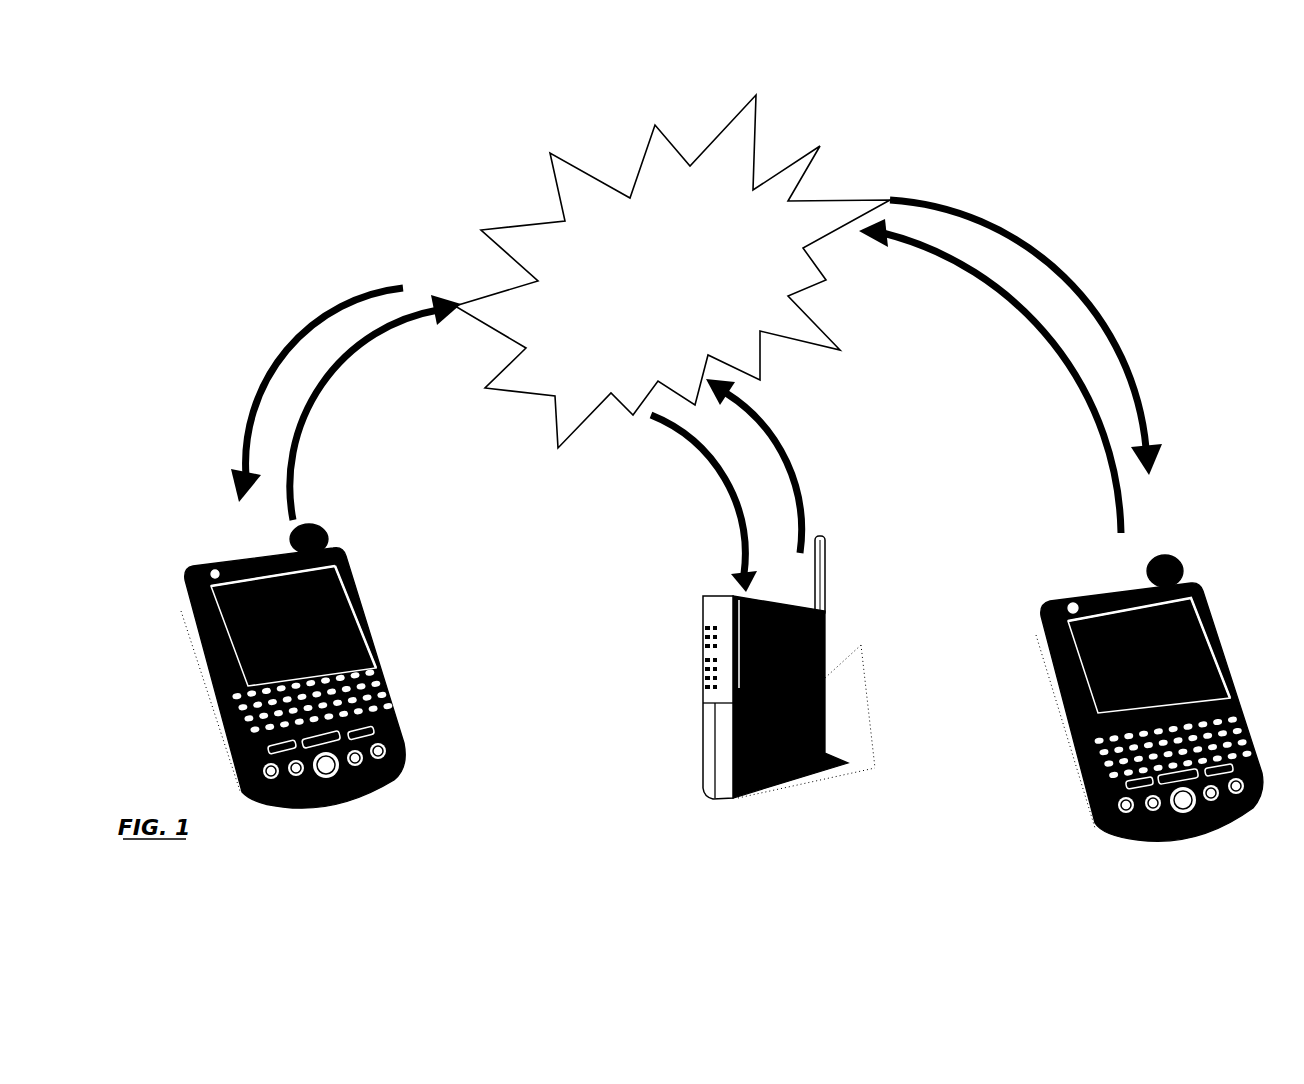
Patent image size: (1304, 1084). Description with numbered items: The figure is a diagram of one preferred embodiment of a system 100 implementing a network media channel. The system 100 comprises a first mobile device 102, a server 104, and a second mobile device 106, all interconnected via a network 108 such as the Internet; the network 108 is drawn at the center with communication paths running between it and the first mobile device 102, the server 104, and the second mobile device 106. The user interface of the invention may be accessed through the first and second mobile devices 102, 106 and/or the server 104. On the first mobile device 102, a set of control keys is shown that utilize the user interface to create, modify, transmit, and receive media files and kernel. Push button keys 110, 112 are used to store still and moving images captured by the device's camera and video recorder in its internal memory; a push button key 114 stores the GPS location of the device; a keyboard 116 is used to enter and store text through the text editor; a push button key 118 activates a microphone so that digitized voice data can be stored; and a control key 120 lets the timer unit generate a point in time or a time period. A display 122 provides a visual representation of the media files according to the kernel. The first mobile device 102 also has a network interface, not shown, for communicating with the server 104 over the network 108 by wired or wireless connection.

The system 100 is at (1124, 165).
The first mobile device 102 is at (355, 640).
The server 104 is at (800, 668).
The second mobile device 106 is at (1053, 695).
The network 108 is at (555, 192).
The push button key 110 is at (383, 695).
The push button key 112 is at (395, 735).
The push button key 114 is at (212, 712).
The keyboard 116 is at (365, 642).
The push button key 118 is at (197, 657).
The control key 120 is at (182, 597).
The display 122 is at (242, 577).